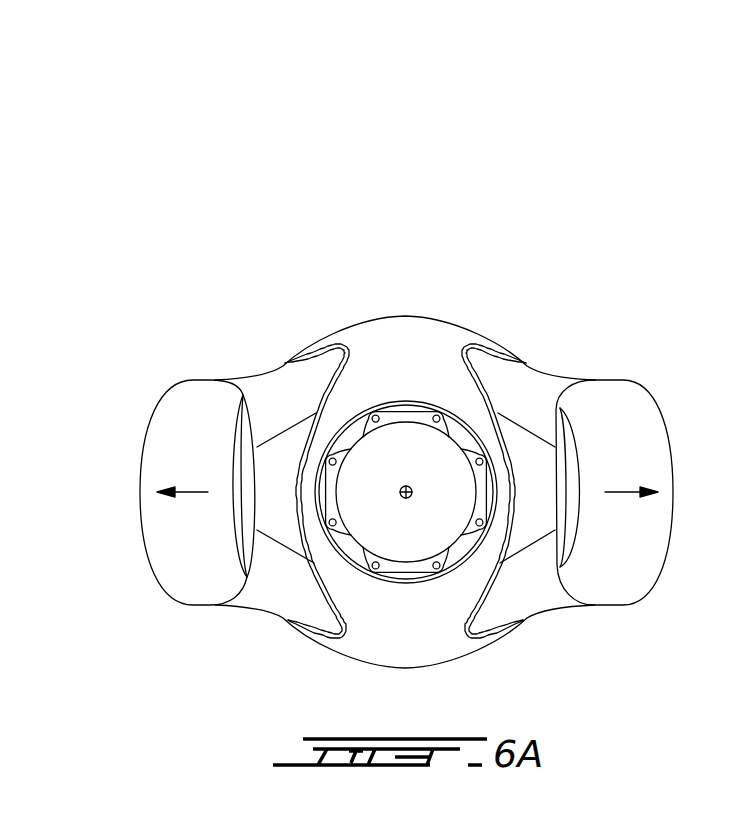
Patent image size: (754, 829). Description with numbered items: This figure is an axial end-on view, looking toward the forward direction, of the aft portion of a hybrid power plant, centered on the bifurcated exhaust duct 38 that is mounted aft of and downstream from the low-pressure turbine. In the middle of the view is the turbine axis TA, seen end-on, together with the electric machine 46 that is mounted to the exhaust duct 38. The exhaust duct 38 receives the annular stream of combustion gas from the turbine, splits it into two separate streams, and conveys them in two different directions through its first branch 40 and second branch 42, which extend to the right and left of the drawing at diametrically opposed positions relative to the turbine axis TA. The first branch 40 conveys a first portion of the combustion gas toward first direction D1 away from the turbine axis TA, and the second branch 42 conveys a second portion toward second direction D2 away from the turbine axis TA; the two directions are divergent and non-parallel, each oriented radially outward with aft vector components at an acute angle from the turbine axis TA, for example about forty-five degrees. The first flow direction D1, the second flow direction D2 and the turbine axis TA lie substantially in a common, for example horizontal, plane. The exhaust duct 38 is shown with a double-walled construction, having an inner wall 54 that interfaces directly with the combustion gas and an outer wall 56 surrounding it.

The bifurcated exhaust duct 38 is at (328, 198).
The first branch 40 is at (622, 423).
The second branch 42 is at (195, 422).
The electric machine 46 is at (442, 527).
The inner wall 54 is at (317, 593).
The outer wall 56 is at (439, 365).
The turbine axis TA is at (406, 492).
The first direction D1 is at (620, 492).
The second direction D2 is at (193, 493).